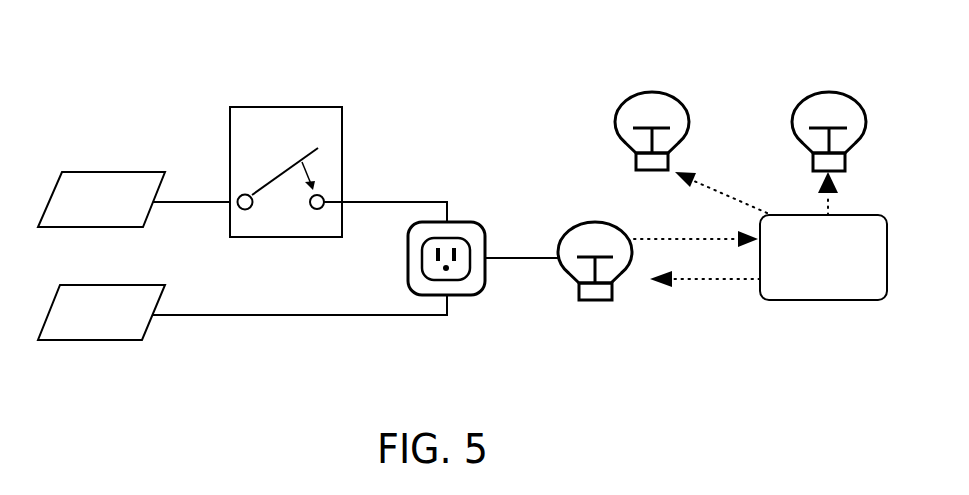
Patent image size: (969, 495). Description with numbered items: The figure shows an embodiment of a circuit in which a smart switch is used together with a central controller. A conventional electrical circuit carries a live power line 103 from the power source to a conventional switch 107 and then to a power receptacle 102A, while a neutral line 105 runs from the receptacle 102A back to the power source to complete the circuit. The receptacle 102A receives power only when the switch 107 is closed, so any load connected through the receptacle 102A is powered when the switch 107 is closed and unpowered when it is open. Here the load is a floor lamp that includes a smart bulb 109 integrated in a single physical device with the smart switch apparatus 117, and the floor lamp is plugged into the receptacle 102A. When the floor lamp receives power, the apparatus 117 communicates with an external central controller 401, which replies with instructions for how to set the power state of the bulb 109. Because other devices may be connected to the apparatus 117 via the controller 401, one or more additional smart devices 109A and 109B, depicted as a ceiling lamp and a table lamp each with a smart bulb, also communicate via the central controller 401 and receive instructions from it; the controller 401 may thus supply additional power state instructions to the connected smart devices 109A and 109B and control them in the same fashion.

The live power line 103 is at (186, 200).
The neutral line 105 is at (192, 316).
The conventional switch 107 is at (342, 113).
The power receptacle 102A is at (468, 221).
The smart bulb 109 is at (614, 200).
The smart switch apparatus 117 is at (618, 237).
The additional smart device 109A is at (615, 118).
The additional smart device 109B is at (792, 118).
The central controller 401 is at (863, 215).